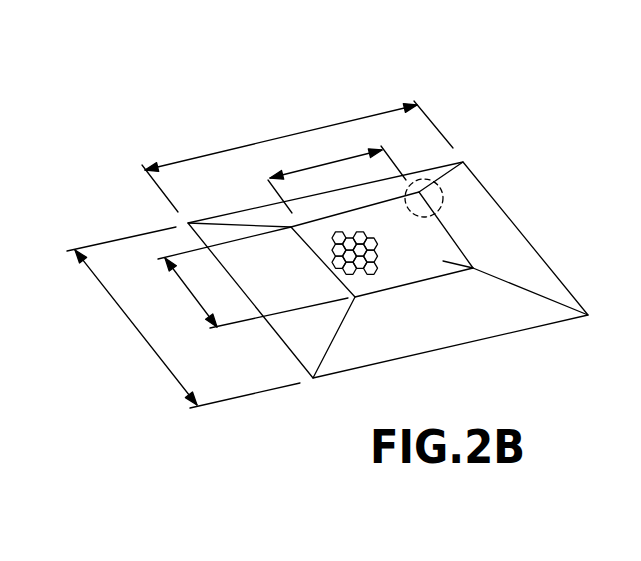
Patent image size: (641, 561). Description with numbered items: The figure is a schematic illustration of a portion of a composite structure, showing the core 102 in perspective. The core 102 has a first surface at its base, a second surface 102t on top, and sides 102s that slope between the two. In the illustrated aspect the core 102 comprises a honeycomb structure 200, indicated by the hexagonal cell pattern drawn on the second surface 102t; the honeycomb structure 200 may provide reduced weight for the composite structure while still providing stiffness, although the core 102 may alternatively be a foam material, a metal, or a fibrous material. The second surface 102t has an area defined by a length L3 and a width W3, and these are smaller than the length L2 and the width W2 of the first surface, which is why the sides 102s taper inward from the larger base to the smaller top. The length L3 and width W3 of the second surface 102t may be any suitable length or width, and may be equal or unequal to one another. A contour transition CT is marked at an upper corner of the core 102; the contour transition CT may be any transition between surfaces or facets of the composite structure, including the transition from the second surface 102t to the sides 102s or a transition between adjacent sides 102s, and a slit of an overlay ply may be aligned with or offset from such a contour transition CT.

The core 102 is at (458, 79).
The sides 102s is at (432, 178).
The second surface 102t is at (546, 317).
The honeycomb structure 200 is at (331, 249).
The contour transition CT is at (443, 193).
The length L2 is at (313, 131).
The length L3 is at (308, 169).
The width W2 is at (129, 320).
The width W3 is at (186, 289).